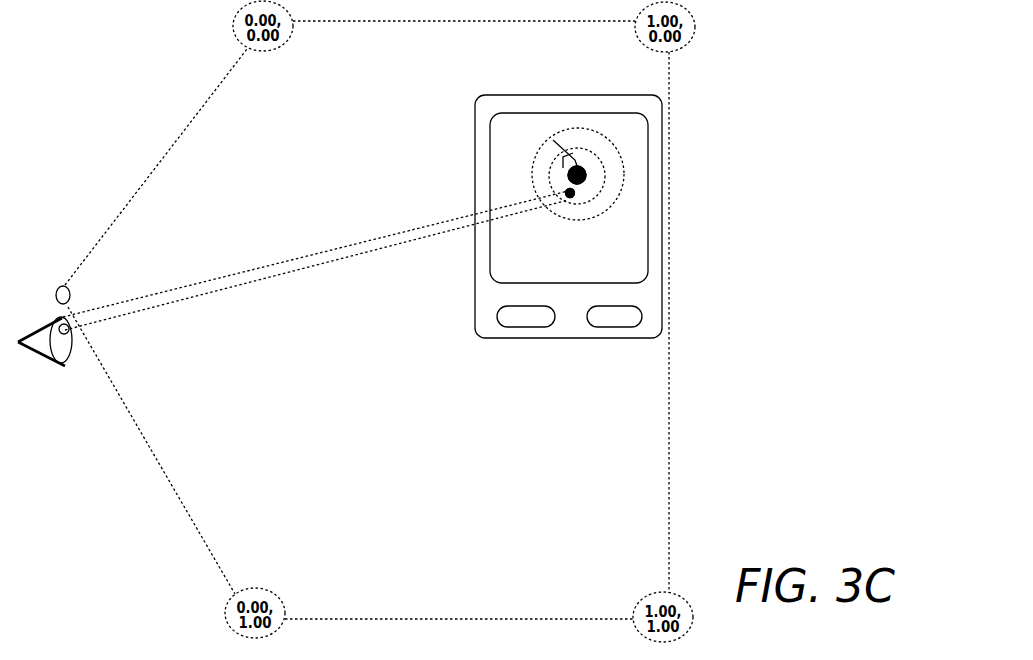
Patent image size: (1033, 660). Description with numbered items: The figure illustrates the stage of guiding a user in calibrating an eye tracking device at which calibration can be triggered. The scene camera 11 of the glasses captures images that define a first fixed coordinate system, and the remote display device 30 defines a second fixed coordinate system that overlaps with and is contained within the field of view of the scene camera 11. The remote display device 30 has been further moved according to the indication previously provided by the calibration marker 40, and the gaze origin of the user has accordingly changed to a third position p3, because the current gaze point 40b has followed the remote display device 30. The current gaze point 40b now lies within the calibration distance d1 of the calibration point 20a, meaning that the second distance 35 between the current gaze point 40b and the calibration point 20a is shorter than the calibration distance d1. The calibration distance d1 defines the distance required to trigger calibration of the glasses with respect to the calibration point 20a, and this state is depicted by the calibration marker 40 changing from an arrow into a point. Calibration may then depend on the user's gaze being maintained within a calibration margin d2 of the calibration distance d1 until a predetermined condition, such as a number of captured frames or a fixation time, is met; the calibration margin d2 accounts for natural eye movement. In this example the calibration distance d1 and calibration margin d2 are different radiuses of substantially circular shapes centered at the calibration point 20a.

The scene camera 11 is at (66, 283).
The third position p3 is at (68, 360).
The remote display device 30 is at (475, 285).
The second distance 35 is at (588, 187).
The calibration distance d1 is at (563, 168).
The calibration margin d2 is at (573, 153).
The calibration marker 40 is at (568, 192).
The current gaze point 40b is at (599, 229).
The calibration point 20a is at (570, 183).